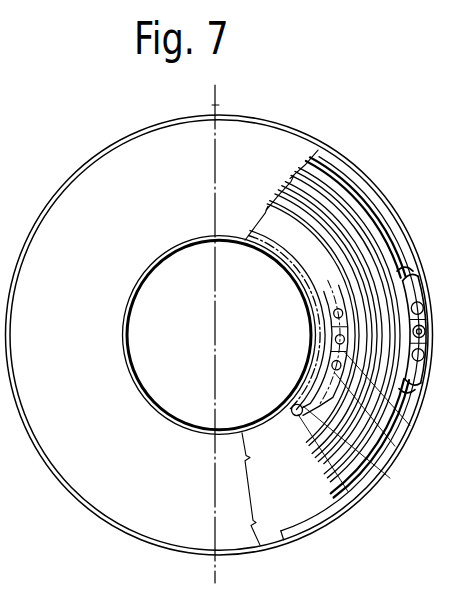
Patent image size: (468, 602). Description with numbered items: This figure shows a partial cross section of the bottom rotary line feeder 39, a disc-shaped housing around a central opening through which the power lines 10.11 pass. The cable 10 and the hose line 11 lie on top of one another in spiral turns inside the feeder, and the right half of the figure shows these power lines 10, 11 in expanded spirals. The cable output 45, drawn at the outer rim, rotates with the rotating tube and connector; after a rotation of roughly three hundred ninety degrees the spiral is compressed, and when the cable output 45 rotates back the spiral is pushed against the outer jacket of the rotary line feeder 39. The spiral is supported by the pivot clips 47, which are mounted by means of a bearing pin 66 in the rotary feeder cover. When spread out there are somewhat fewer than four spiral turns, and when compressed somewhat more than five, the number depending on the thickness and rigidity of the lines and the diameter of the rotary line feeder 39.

The rotary line feeder 39 is at (53, 197).
The power lines 10.11 is at (342, 290).
The cable 10 is at (337, 324).
The hose line 11 is at (349, 192).
The cable output 45 is at (428, 442).
The pivot clips 47 is at (401, 478).
The bearing pin 66 is at (381, 516).